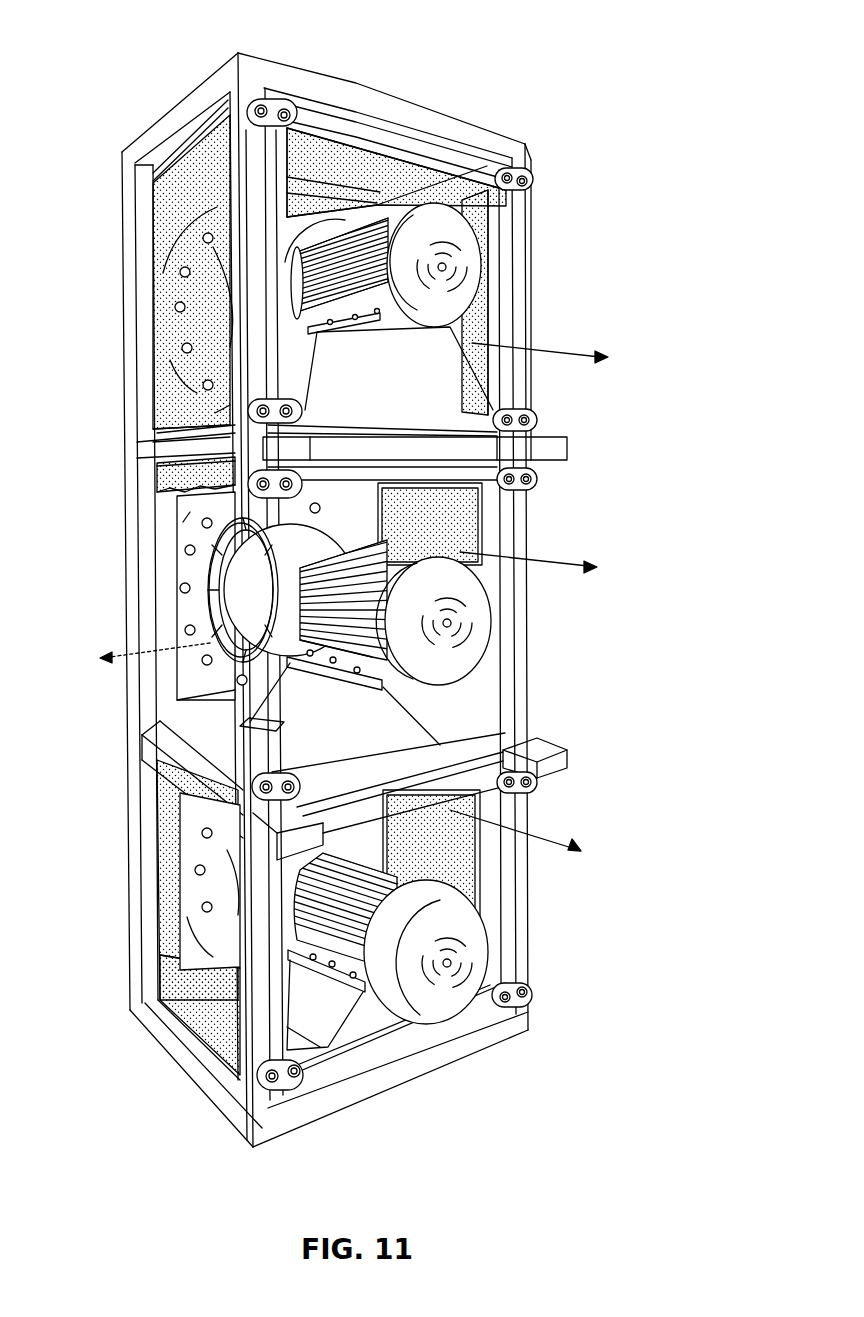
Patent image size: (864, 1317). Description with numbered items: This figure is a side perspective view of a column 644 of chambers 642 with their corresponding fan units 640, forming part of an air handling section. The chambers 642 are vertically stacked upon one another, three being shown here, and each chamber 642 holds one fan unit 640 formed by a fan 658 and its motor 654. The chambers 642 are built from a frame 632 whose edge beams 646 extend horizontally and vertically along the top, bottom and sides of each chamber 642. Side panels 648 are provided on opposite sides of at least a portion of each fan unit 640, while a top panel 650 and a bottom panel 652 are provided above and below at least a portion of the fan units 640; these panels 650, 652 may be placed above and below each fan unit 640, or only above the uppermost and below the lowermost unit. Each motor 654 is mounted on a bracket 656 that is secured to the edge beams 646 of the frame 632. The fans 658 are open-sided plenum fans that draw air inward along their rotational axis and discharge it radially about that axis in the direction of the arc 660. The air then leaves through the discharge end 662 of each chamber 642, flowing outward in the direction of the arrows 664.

The frame 632 is at (540, 937).
The fan unit 640 is at (477, 252).
The chamber 642 is at (186, 222).
The column 644 is at (189, 38).
The edge beam 646 is at (523, 892).
The side panel 648 is at (468, 512).
The top panel 650 is at (382, 170).
The bottom panel 652 is at (223, 1055).
The motor 654 is at (472, 270).
The bracket 656 is at (540, 717).
The fan 658 is at (217, 603).
The arc 660 is at (167, 653).
The discharge end 662 is at (497, 206).
The arrows 664 is at (562, 358).